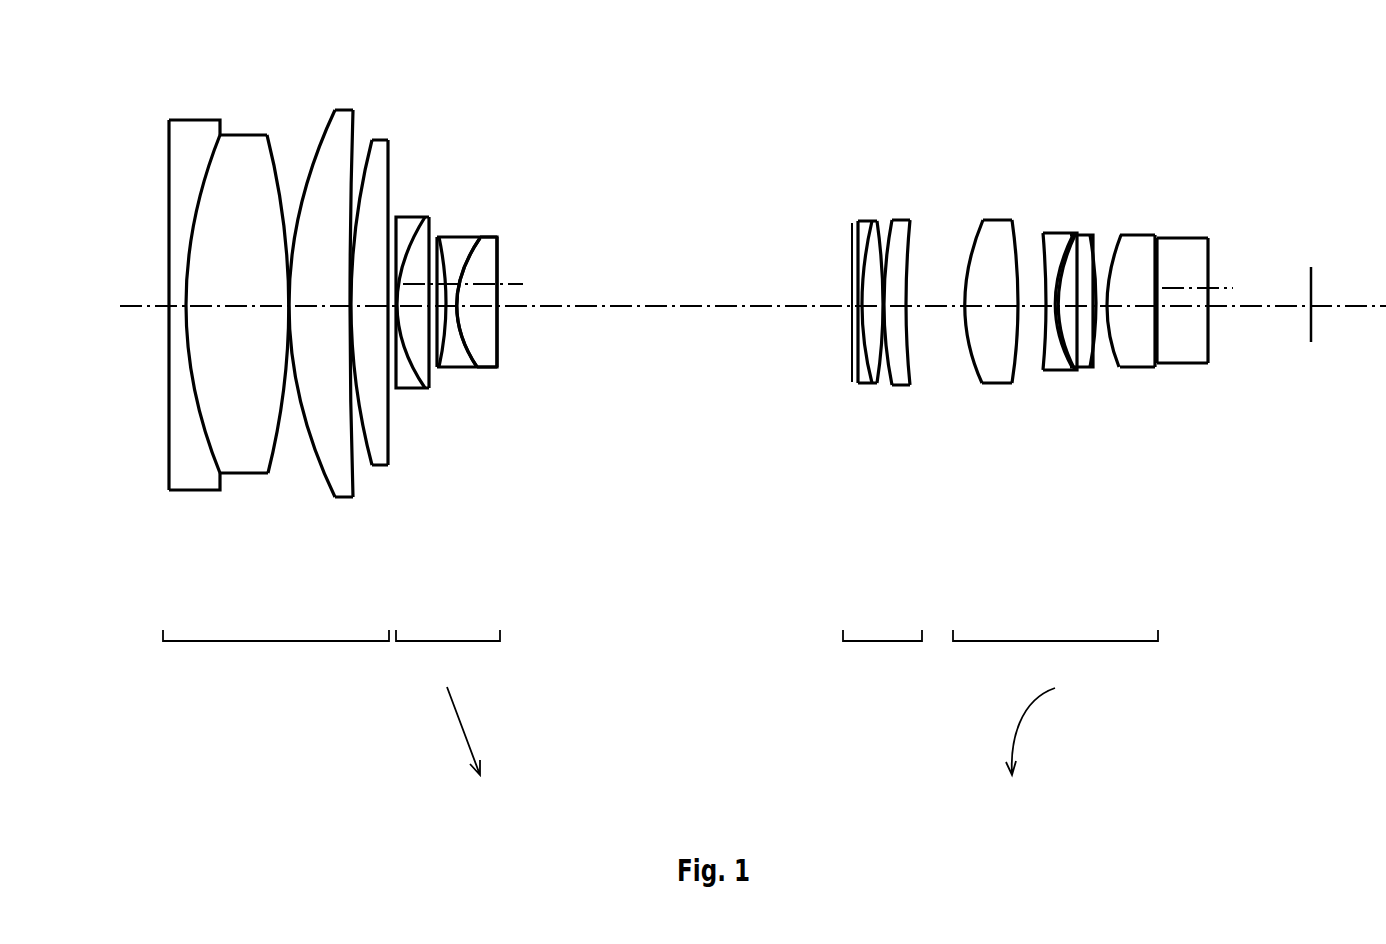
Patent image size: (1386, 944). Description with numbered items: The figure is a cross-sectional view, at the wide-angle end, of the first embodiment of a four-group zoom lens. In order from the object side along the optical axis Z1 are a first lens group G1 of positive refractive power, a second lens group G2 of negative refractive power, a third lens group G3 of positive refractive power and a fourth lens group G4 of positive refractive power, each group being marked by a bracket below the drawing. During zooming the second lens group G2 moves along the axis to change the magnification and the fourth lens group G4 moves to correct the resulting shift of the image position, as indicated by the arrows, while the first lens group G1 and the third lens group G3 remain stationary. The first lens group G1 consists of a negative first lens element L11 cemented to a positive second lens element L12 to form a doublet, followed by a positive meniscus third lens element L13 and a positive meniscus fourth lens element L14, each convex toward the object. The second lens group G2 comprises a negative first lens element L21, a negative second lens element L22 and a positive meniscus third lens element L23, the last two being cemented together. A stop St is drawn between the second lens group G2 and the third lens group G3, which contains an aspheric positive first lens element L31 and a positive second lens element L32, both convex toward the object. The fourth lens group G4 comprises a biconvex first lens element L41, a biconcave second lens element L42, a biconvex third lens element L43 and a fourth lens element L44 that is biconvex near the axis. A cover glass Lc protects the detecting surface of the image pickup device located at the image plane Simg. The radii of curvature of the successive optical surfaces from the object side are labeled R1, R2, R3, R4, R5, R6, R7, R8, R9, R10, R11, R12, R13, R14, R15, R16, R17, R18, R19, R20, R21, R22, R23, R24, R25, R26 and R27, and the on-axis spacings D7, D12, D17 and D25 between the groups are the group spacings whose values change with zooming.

The first lens group G1 is at (276, 655).
The second lens group G2 is at (448, 702).
The third lens group G3 is at (882, 655).
The fourth lens group G4 is at (1055, 702).
The first lens element L11 is at (191, 136).
The second lens element L12 is at (247, 148).
The third lens element L13 is at (343, 123).
The fourth lens element L14 is at (380, 153).
The first lens element L21 is at (413, 230).
The second lens element L22 is at (455, 247).
The third lens element L23 is at (483, 247).
The first lens element L31 is at (868, 230).
The second lens element L32 is at (903, 230).
The first lens element L41 is at (997, 232).
The second lens element L42 is at (1053, 247).
The third lens element L43 is at (1083, 247).
The fourth lens element L44 is at (1137, 248).
The cover glass Lc is at (1188, 253).
The aperture stop St is at (852, 243).
The image plane Simg is at (1308, 270).
The optical axis Z1 is at (1357, 310).
The on-axis surface spacing D7 is at (481, 284).
The on-axis surface spacing D12 is at (682, 285).
The on-axis surface spacing D17 is at (937, 284).
The on-axis surface spacing D25 is at (1222, 286).
The surface radius of curvature R1 is at (169, 420).
The surface radius of curvature R2 is at (212, 445).
The surface radius of curvature R3 is at (270, 474).
The surface radius of curvature R4 is at (318, 457).
The surface radius of curvature R5 is at (354, 497).
The surface radius of curvature R6 is at (372, 458).
The surface radius of curvature R7 is at (389, 456).
The surface radius of curvature R8 is at (398, 388).
The surface radius of curvature R9 is at (429, 388).
The surface radius of curvature R10 is at (440, 367).
The surface radius of curvature R11 is at (470, 348).
The surface radius of curvature R12 is at (497, 325).
The surface radius of curvature R13 is at (802, 286).
The surface radius of curvature R14 is at (858, 330).
The surface radius of curvature R15 is at (874, 364).
The surface radius of curvature R16 is at (887, 383).
The surface radius of curvature R17 is at (912, 380).
The surface radius of curvature R18 is at (968, 348).
The surface radius of curvature R19 is at (1012, 380).
The surface radius of curvature R20 is at (1043, 362).
The surface radius of curvature R21 is at (1064, 370).
The surface radius of curvature R22 is at (1085, 367).
The surface radius of curvature R23 is at (1108, 360).
The surface radius of curvature R24 is at (1117, 367).
The surface radius of curvature R25 is at (1147, 367).
The surface radius of curvature R26 is at (1208, 363).
The surface radius of curvature R27 is at (1208, 326).